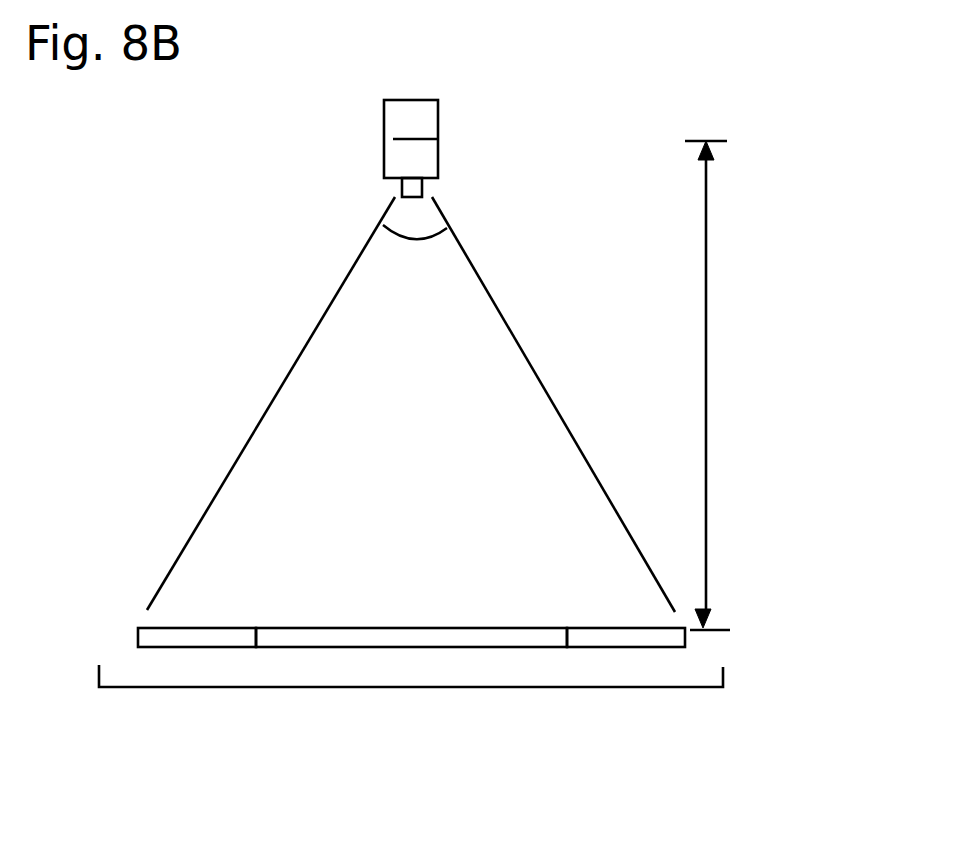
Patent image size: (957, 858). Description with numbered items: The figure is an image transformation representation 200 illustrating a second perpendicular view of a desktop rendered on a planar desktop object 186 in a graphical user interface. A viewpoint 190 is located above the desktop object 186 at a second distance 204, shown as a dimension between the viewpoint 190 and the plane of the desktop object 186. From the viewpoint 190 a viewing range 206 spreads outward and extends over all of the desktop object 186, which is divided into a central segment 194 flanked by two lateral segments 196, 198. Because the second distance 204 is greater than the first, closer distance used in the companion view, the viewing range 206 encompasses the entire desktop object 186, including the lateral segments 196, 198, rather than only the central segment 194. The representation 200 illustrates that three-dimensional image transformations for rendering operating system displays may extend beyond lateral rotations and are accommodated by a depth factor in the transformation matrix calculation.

The desktop object 186 is at (723, 674).
The viewpoint 190 is at (438, 139).
The central segment 194 is at (367, 627).
The lateral segment 196 is at (198, 627).
The lateral segment 198 is at (588, 627).
The image transformation representation 200 is at (568, 198).
The second distance 204 is at (706, 275).
The viewing range 206 is at (428, 235).